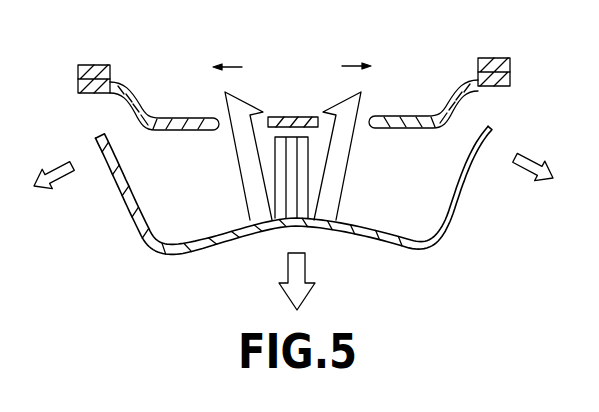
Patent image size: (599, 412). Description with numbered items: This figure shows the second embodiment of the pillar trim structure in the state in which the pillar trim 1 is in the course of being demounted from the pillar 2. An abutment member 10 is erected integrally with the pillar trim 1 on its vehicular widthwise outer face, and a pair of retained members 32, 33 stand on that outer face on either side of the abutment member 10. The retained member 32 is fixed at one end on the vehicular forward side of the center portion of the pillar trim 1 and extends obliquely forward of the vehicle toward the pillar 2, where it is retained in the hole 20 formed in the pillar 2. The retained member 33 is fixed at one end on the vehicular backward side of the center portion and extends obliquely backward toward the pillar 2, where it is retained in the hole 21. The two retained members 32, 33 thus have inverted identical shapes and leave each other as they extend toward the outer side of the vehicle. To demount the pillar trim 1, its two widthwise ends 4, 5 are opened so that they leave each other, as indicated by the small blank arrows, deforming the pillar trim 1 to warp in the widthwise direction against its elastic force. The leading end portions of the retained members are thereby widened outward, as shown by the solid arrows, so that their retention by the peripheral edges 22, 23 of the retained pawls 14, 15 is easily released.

The pillar trim 1 is at (198, 250).
The pillar 2 is at (463, 90).
The widthwise end 4 is at (97, 140).
The widthwise end 5 is at (495, 138).
The abutment member 10 is at (320, 212).
The retained pawl 14 is at (243, 100).
The retained pawl 15 is at (323, 110).
The hole 20 is at (218, 118).
The hole 21 is at (372, 114).
The peripheral edge 22 is at (268, 122).
The peripheral edge 23 is at (318, 122).
The retained member 32 is at (250, 178).
The retained member 33 is at (343, 178).